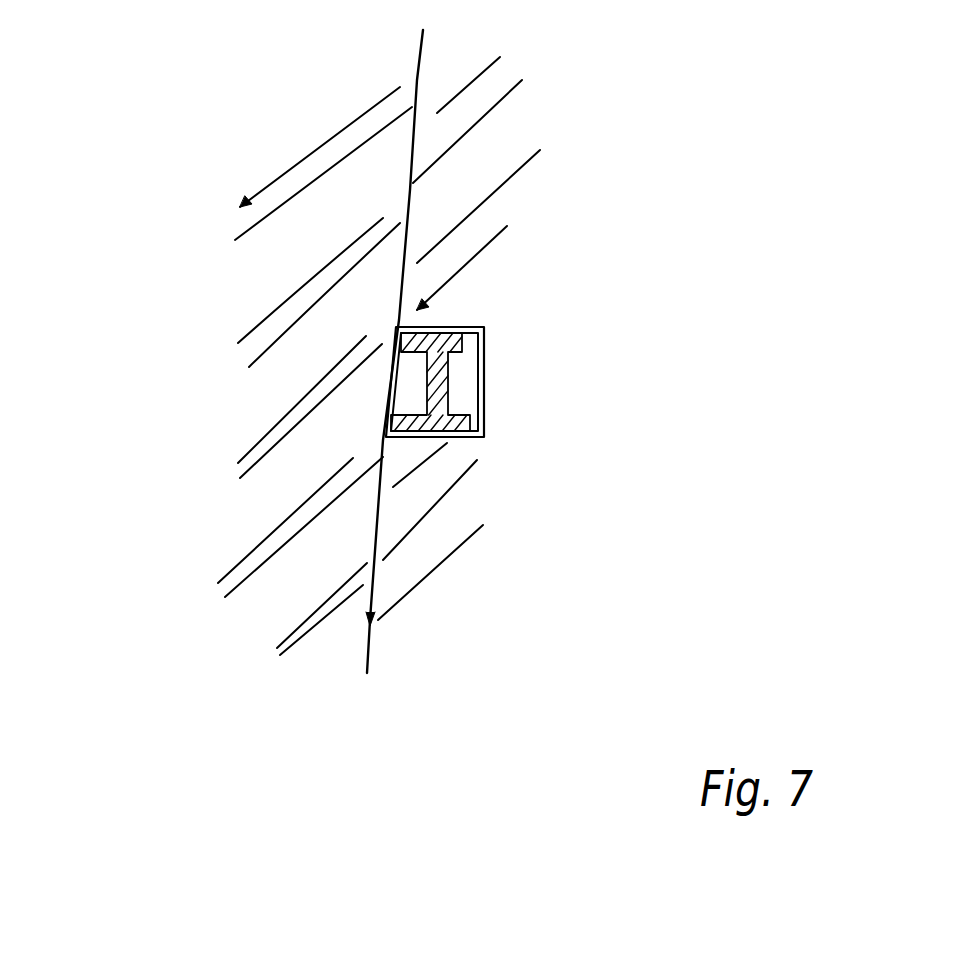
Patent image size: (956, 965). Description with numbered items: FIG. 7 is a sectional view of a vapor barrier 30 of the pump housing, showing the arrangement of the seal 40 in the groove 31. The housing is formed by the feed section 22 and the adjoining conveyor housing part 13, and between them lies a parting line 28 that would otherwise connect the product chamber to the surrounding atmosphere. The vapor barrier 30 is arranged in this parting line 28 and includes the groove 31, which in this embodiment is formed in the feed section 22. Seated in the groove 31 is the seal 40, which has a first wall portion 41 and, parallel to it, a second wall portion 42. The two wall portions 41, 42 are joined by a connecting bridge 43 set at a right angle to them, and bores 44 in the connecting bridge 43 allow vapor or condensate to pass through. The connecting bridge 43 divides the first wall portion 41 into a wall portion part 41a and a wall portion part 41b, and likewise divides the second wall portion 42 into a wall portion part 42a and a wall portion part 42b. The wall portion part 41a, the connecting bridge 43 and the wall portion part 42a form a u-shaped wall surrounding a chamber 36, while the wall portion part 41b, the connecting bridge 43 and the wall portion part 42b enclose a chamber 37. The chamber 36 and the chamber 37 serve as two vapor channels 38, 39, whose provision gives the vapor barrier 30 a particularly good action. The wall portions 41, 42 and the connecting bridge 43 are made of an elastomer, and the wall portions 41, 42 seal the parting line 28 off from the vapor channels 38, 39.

The conveyor housing part 13 is at (560, 280).
The feed section 22 is at (323, 107).
The parting line 28 is at (363, 683).
The vapor barrier 30 is at (503, 405).
The groove 31 is at (482, 380).
The chamber 36 is at (478, 393).
The chamber 37 is at (412, 372).
The vapor channel 38 is at (460, 372).
The vapor channel 39 is at (412, 364).
The seal 40 is at (485, 328).
The first wall portion 41 is at (485, 347).
The wall portion part 41a is at (463, 330).
The wall portion part 41b is at (397, 330).
The second wall portion 42 is at (475, 437).
The wall portion part 42a is at (450, 437).
The wall portion part 42b is at (383, 435).
The connecting bridge 43 is at (482, 430).
The bores 44 is at (385, 393).